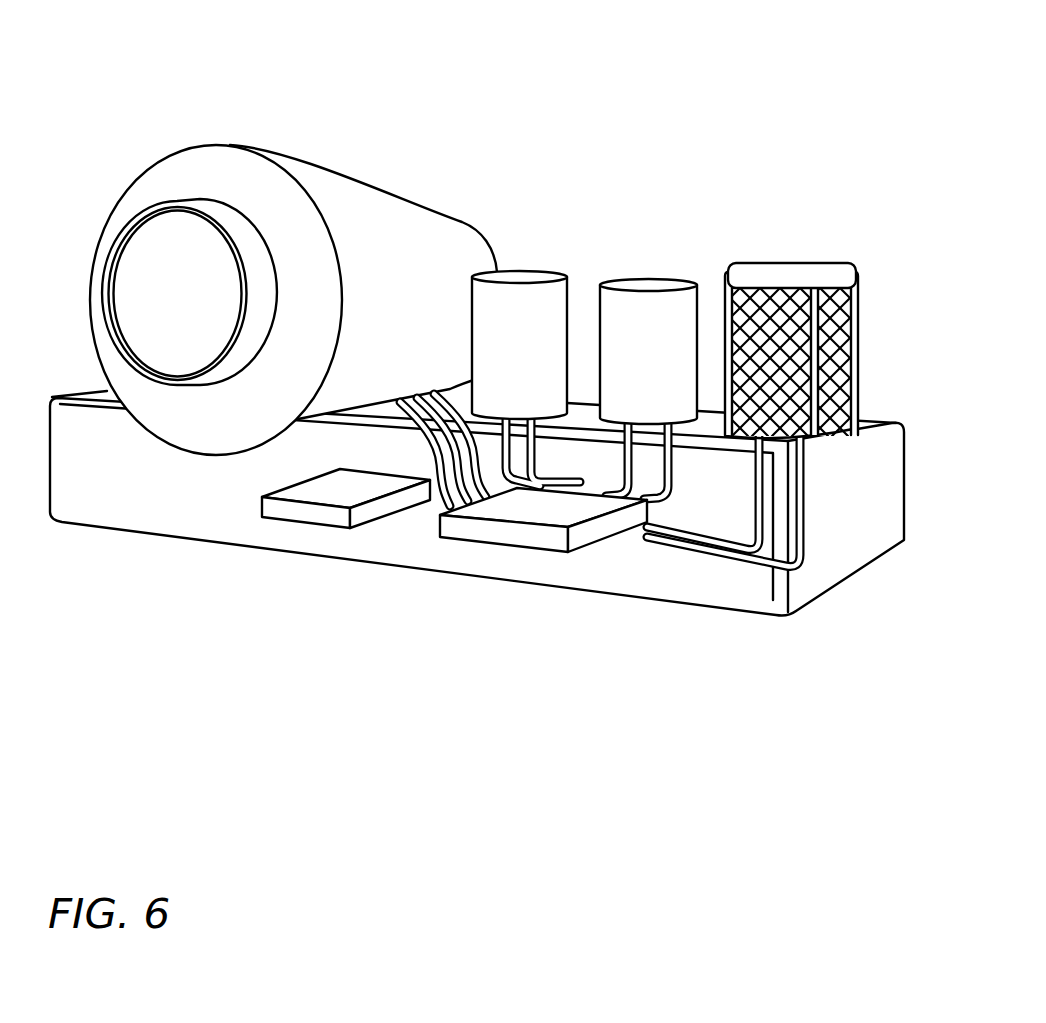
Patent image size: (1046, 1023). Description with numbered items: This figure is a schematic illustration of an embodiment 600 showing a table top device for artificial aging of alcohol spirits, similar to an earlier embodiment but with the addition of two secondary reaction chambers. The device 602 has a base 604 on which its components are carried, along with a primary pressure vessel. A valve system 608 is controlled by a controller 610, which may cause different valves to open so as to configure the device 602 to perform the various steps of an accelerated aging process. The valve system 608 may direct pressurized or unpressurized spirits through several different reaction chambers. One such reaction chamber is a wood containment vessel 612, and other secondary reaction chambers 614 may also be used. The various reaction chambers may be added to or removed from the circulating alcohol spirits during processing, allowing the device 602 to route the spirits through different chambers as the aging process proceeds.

The embodiment 600 is at (116, 731).
The device 602 is at (838, 583).
The base 604 is at (216, 143).
The valve system 608 is at (523, 548).
The controller 610 is at (294, 522).
The wood containment vessel 612 is at (767, 262).
The secondary reaction chambers 614 is at (610, 280).